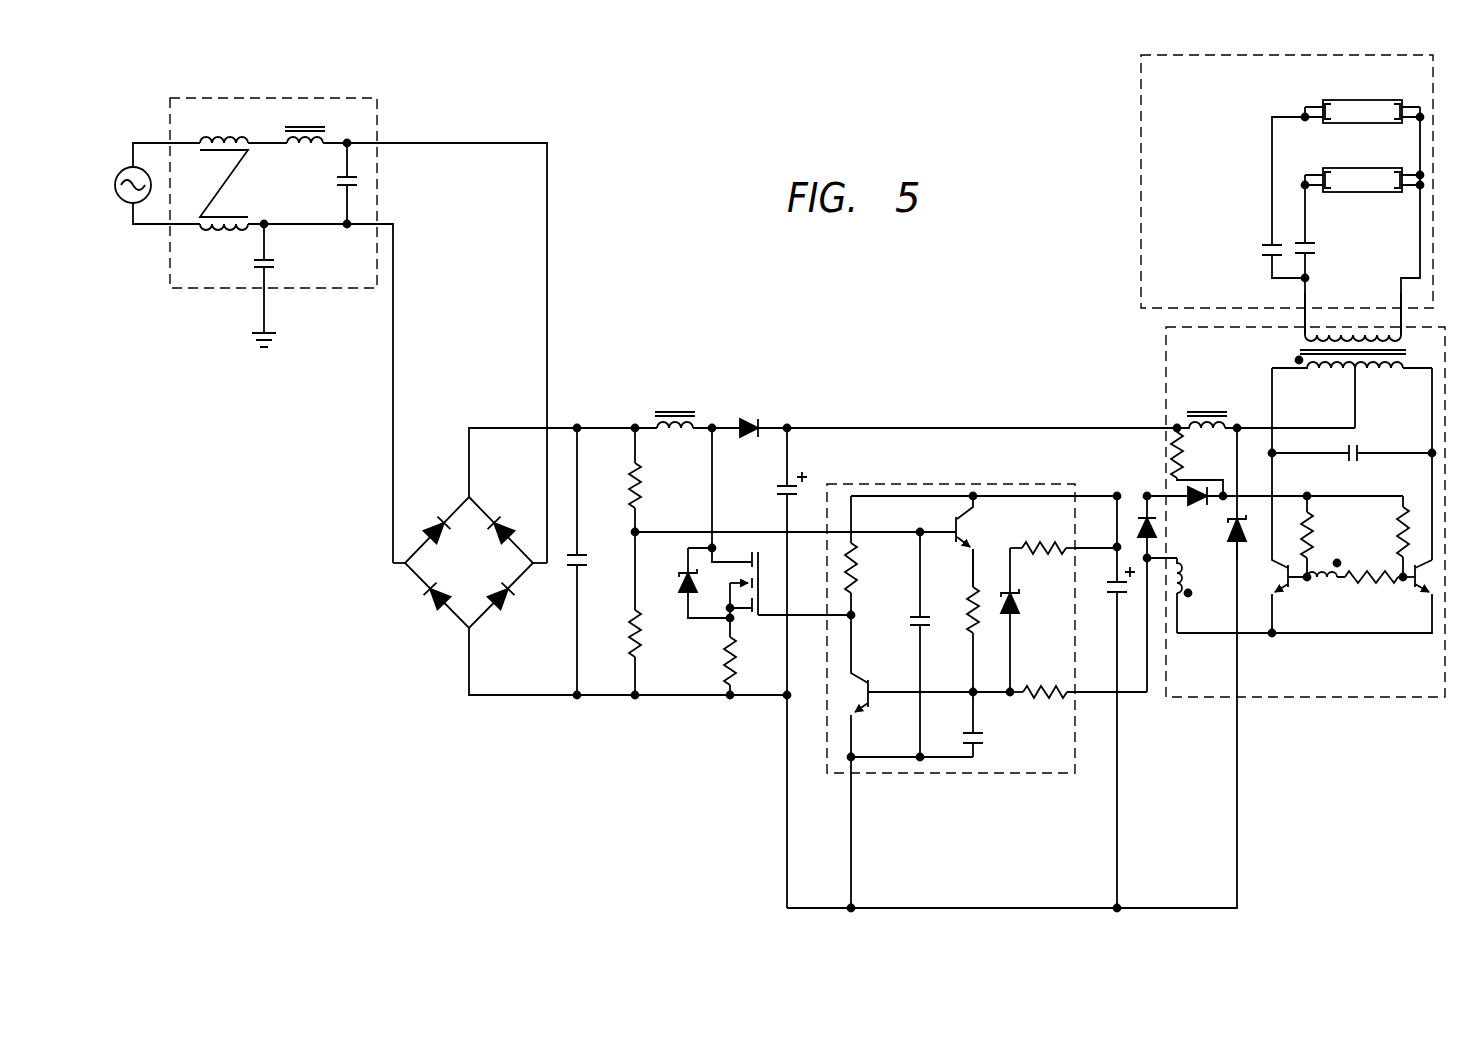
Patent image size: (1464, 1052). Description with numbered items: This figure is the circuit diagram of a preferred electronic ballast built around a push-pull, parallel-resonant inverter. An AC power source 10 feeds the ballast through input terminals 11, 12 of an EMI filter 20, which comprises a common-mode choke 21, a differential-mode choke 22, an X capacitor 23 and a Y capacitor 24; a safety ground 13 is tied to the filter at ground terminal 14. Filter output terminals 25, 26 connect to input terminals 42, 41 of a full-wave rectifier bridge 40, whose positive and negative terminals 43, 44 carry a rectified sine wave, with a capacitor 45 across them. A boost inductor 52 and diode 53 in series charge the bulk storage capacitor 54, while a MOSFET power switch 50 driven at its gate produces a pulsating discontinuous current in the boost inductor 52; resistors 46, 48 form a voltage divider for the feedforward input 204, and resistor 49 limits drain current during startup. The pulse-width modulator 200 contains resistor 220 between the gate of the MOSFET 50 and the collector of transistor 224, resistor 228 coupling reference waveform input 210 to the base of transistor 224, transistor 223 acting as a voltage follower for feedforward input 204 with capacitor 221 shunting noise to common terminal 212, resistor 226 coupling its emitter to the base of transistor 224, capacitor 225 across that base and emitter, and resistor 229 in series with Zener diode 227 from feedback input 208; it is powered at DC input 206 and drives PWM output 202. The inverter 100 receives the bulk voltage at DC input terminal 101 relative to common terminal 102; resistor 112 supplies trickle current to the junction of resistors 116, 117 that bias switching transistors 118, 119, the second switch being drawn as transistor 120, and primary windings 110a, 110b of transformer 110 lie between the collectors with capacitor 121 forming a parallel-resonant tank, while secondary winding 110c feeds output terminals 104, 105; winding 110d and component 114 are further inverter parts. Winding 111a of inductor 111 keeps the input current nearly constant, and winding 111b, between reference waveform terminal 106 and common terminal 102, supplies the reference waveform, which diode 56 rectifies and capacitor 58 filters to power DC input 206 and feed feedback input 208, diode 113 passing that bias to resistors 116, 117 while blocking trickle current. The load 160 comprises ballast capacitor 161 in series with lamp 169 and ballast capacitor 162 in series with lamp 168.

The AC power source 10 is at (152, 186).
The input terminal 11 is at (146, 143).
The input terminal 12 is at (136, 226).
The safety ground 13 is at (264, 323).
The ground terminal 14 is at (266, 292).
The electromagnetic interference filter 20 is at (347, 98).
The common-mode choke 21 is at (246, 141).
The differential-mode choke 22 is at (295, 133).
The X capacitor 23 is at (341, 177).
The Y capacitor 24 is at (270, 262).
The output terminal 25 is at (396, 143).
The output terminal 26 is at (386, 224).
The full-wave rectifier bridge assembly 40 is at (384, 630).
The bridge input terminal 41 is at (393, 561).
The bridge input terminal 42 is at (547, 531).
The positive terminal 43 is at (498, 428).
The negative terminal 44 is at (469, 655).
The capacitor 45 is at (590, 567).
The resistor 46 is at (642, 480).
The resistor 48 is at (642, 645).
The resistor 49 is at (727, 670).
The MOSFET power switch 50 is at (685, 605).
The boost inductor 52 is at (673, 412).
The diode 53 is at (745, 419).
The bulk storage capacitor 54 is at (785, 486).
The diode 56 is at (1157, 527).
The capacitor 58 is at (1117, 615).
The inverter 100 is at (1163, 356).
The DC input terminal 101 is at (1160, 427).
The common terminal 102 is at (1238, 878).
The inverter output terminal 104 is at (1304, 293).
The inverter output terminal 105 is at (1400, 294).
The reference waveform terminal 106 is at (1157, 562).
The inverter transformer 110 is at (1286, 353).
The primary winding 110a is at (1296, 371).
The primary winding 110b is at (1397, 371).
The secondary winding 110c is at (1300, 340).
The transformer winding 110d is at (1343, 581).
The inductor 111 is at (1196, 390).
The inductor winding 111a is at (1226, 420).
The inductor winding 111b is at (1189, 596).
The resistor 112 is at (1184, 455).
The diode 113 is at (1180, 491).
The Zener diode 114 is at (1232, 541).
The resistor 116 is at (1395, 536).
The resistor 117 is at (1314, 542).
The switching transistor 118 is at (1275, 612).
The switching transistor 119 is at (1373, 583).
The transistor 120 is at (1427, 557).
The capacitor 121 is at (1366, 452).
The load 160 is at (1140, 230).
The first ballast capacitor 161 is at (1270, 237).
The second ballast capacitor 162 is at (1307, 237).
The lamp 168 is at (1336, 168).
The lamp 169 is at (1333, 100).
The PWM circuit 200 is at (829, 775).
The PWM output 202 is at (826, 615).
The feedforward input 204 is at (803, 532).
The DC input 206 is at (1091, 493).
The feedback input 208 is at (1100, 546).
The reference waveform input 210 is at (1092, 700).
The common terminal 212 is at (851, 853).
The resistor 220 is at (860, 572).
The capacitor 221 is at (915, 617).
The transistor 223 is at (978, 509).
The transistor 224 is at (857, 676).
The capacitor 225 is at (984, 734).
The resistor 226 is at (969, 611).
The Zener diode 227 is at (1020, 606).
The resistor 228 is at (1040, 690).
The resistor 229 is at (1029, 551).